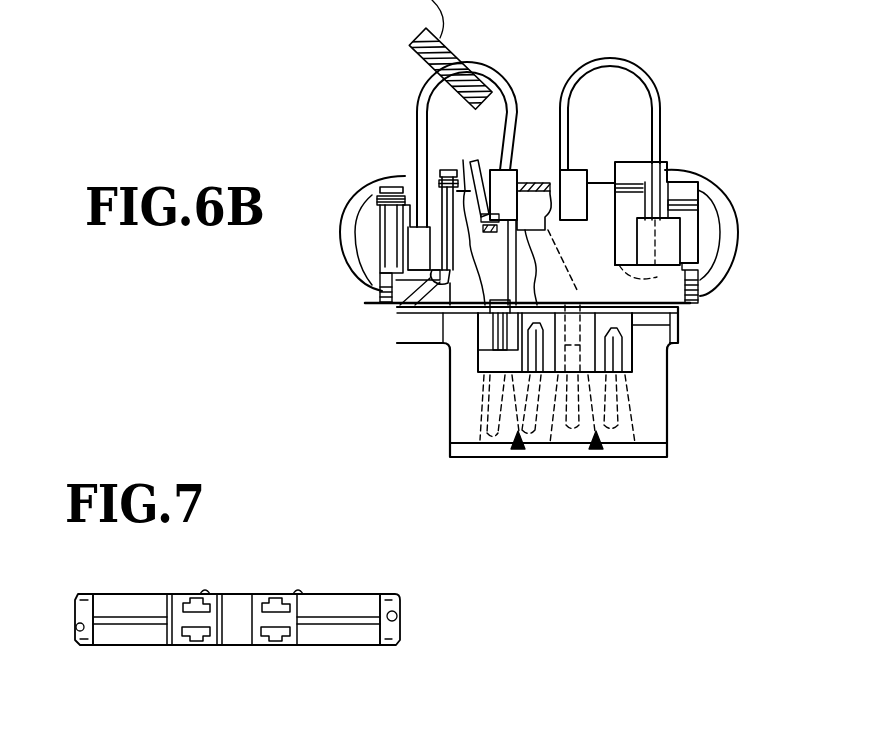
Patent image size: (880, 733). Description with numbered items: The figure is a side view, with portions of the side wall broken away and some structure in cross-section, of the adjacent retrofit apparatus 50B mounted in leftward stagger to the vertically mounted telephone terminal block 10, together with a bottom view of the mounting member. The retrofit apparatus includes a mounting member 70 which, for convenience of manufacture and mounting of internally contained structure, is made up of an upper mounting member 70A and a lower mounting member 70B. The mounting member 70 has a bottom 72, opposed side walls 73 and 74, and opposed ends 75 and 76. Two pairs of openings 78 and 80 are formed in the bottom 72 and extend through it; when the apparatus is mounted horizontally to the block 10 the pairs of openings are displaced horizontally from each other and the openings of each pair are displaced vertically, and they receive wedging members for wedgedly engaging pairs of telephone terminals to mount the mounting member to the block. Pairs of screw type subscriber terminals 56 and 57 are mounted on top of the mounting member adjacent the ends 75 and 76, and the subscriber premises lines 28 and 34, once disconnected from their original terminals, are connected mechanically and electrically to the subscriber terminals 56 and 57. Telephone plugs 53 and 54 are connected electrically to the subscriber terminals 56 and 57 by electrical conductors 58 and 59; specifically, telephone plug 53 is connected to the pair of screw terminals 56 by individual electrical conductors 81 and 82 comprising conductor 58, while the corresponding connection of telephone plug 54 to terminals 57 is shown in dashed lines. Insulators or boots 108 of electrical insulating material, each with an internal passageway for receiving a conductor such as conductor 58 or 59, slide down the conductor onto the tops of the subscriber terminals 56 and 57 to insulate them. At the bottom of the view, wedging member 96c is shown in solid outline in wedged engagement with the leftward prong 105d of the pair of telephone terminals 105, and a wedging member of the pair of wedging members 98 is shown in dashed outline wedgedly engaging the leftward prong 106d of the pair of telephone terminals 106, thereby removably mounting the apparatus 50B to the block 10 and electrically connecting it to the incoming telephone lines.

In FIG. 6B, the telephone terminal block 10 is at (668, 410).
In FIG. 6B, the subscriber premises line 28 is at (352, 196).
In FIG. 6B, the subscriber premises line 34 is at (745, 225).
In FIG. 6B, the adjacent retrofit apparatus 50B is at (680, 110).
In FIG. 6B, the telephone plug 53 is at (490, 170).
In FIG. 6B, the telephone plug 54 is at (577, 170).
In FIG. 6B, the subscriber terminals 56 is at (445, 170).
In FIG. 6B, the subscriber terminals 57 is at (670, 168).
In FIG. 6B, the electrical conductor 58 is at (410, 113).
In FIG. 6B, the electrical conductor 59 is at (648, 68).
In FIG. 6B, the mounting member 70 is at (448, 310).
In FIG. 6B, the upper mounting member 70A is at (692, 250).
In FIG. 6B, the lower mounting member 70B is at (681, 325).
In FIG. 7, the bottom 72 is at (247, 627).
In FIG. 7, the side wall 73 is at (352, 593).
In FIG. 7, the side wall 74 is at (325, 647).
In FIG. 7, the end 75 is at (72, 627).
In FIG. 7, the end 76 is at (400, 627).
In FIG. 7, the pair of openings 78 is at (163, 608).
In FIG. 7, the pair of openings 80 is at (298, 600).
In FIG. 6B, the electrical conductor 81 is at (385, 303).
In FIG. 6B, the electrical conductor 82 is at (470, 278).
In FIG. 6B, the wedging member 96c is at (493, 333).
In FIG. 6B, the wedging members 98 is at (593, 322).
In FIG. 6B, the pair of telephone terminals 105 is at (512, 458).
In FIG. 6B, the leftward prong 105d is at (478, 353).
In FIG. 6B, the pair of telephone terminals 106 is at (597, 458).
In FIG. 6B, the leftward prong 106d is at (585, 390).
In FIG. 6B, the insulator or boot 108 is at (703, 192).